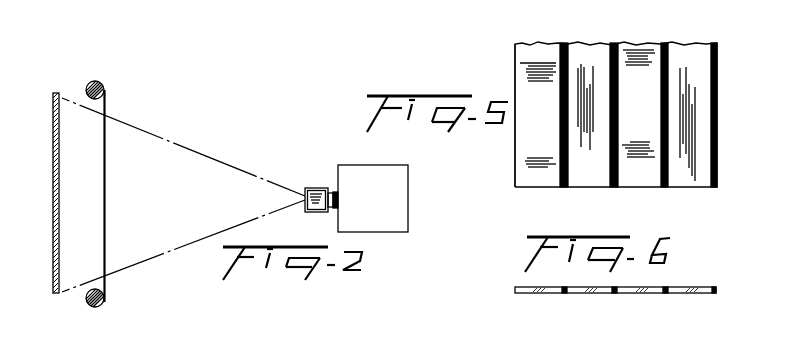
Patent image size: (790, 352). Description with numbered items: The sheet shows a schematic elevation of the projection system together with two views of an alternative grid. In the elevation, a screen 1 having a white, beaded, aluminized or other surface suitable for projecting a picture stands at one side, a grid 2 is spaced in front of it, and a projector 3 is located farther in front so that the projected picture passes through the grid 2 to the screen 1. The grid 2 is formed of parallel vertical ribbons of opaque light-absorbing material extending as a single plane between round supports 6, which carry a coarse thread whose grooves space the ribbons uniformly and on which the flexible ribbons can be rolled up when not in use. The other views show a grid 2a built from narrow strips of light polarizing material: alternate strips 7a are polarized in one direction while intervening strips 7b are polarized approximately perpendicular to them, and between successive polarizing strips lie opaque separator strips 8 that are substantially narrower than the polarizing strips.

In FIG. 2, the screen 1 is at (53, 131).
In FIG. 2, the grid 2 is at (105, 250).
In FIG. 5, the grid 2a is at (518, 160).
In FIG. 6, the grid 2a is at (520, 293).
In FIG. 2, the projector 3 is at (352, 172).
In FIG. 2, the supports 6 is at (102, 83).
In FIG. 5, the alternate strips 7a is at (550, 184).
In FIG. 5, the intervening strips 7b is at (603, 184).
In FIG. 5, the opaque separator strips 8 is at (563, 45).
In FIG. 6, the opaque separator strips 8 is at (613, 294).